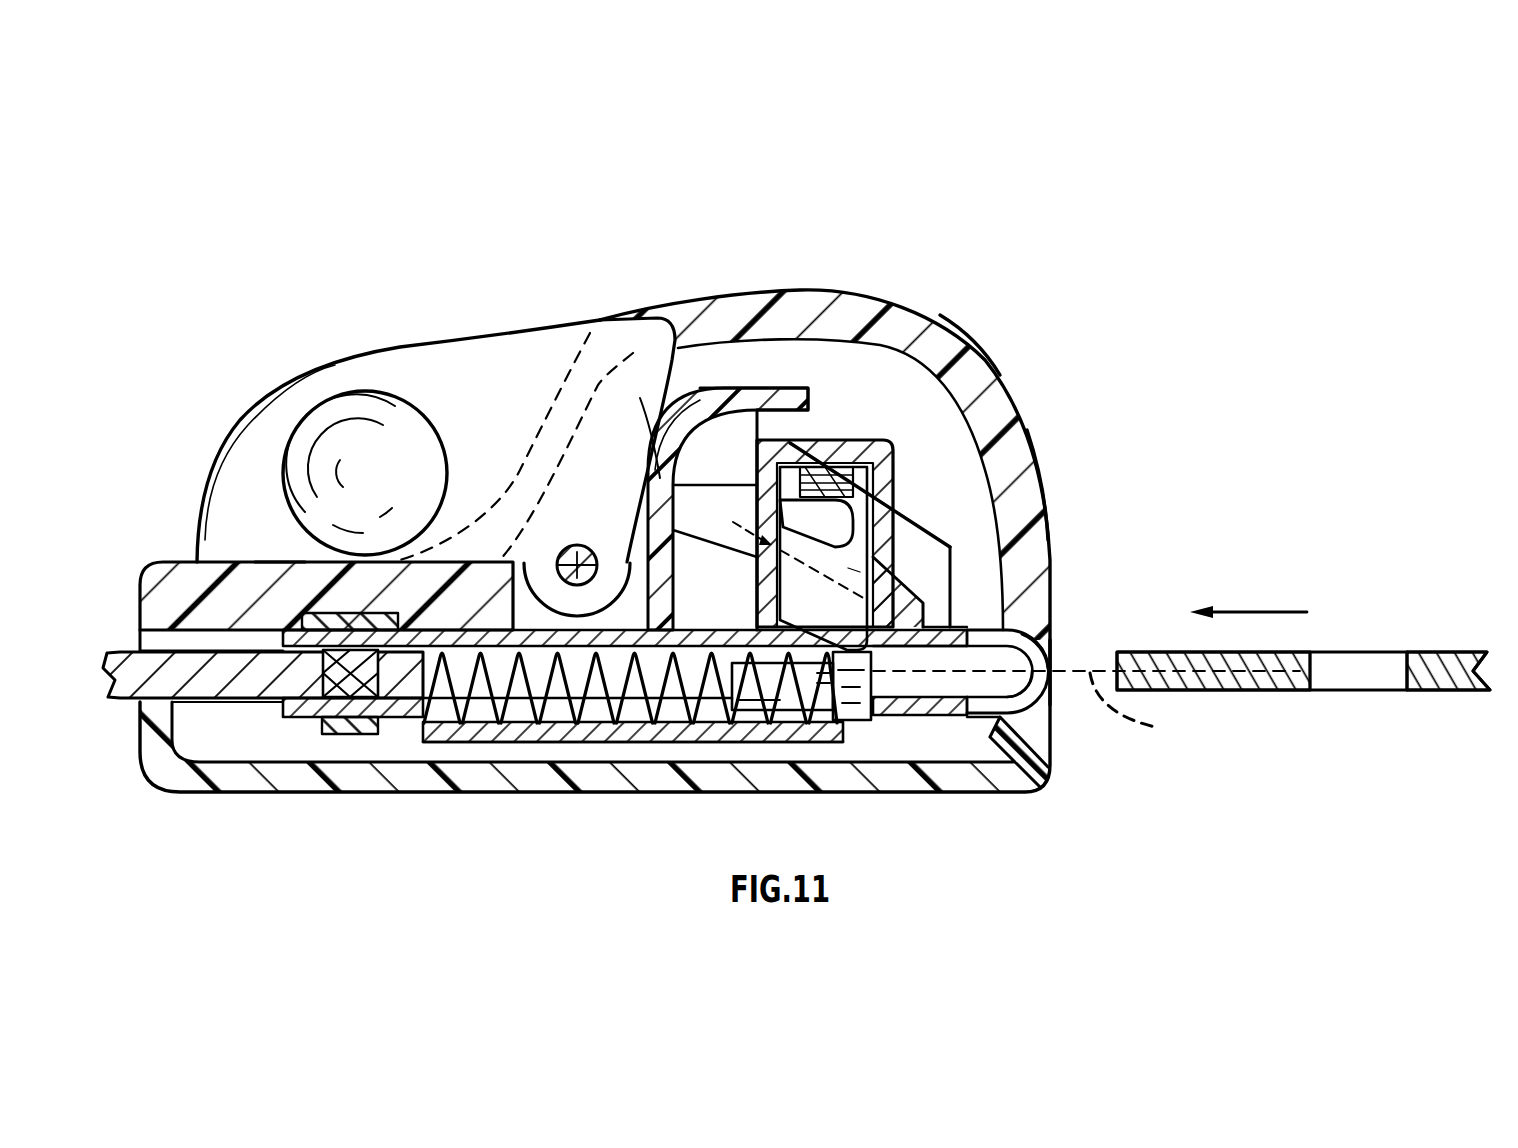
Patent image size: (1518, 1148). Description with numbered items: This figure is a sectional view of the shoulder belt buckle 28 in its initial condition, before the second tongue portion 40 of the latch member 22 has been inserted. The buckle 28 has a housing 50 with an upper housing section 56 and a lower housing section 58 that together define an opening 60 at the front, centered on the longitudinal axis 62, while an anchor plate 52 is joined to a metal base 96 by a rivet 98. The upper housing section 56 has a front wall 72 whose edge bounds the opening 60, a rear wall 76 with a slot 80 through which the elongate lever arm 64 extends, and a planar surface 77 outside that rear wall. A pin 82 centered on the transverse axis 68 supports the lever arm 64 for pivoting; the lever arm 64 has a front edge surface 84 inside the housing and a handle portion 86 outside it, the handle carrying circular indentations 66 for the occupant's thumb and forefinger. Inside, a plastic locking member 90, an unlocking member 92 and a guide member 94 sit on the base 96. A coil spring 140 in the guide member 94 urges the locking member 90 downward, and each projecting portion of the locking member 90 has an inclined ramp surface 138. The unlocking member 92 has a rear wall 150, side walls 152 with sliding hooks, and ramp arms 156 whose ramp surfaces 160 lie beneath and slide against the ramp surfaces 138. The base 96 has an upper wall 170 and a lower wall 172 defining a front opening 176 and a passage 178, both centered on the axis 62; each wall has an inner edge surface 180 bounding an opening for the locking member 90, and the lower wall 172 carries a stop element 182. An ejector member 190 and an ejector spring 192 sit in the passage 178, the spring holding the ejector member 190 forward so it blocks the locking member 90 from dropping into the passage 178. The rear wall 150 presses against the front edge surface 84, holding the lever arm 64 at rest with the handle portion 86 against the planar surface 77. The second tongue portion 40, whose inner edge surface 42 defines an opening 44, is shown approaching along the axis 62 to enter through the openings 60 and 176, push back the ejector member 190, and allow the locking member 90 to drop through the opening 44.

The latch member 22 is at (1325, 568).
The shoulder belt buckle 28 is at (836, 205).
The second tongue portion 40 is at (1468, 640).
The inner edge surface 42 is at (1407, 672).
The opening 44 is at (1360, 660).
The housing 50 is at (947, 306).
The anchor plate 52 is at (124, 632).
The upper housing section 56 is at (1040, 507).
The lower housing section 58 is at (1047, 783).
The opening 60 is at (1065, 625).
The longitudinal axis 62 is at (1146, 710).
The lever arm 64 is at (325, 355).
The circular indentations 66 is at (310, 437).
The transverse axis 68 is at (568, 548).
The front wall 72 is at (990, 398).
The rear wall 76 is at (660, 310).
The planar surface 77 is at (278, 557).
The slot 80 is at (535, 432).
The pin 82 is at (576, 545).
The front edge surface 84 is at (652, 412).
The handle portion 86 is at (240, 466).
The locking member 90 is at (850, 570).
The unlocking member 92 is at (800, 378).
The guide member 94 is at (897, 430).
The base 96 is at (630, 740).
The rivet 98 is at (342, 735).
The ramp surface 138 is at (815, 553).
The coil spring 140 is at (820, 468).
The rear wall 150 is at (658, 427).
The side wall 152 is at (748, 426).
The ramp arm 156 is at (728, 475).
The ramp surface 160 is at (715, 540).
The upper wall 170 is at (950, 633).
The lower wall 172 is at (957, 713).
The opening 176 is at (1043, 640).
The passage 178 is at (955, 681).
The inner edge surface 180 is at (767, 636).
The stop element 182 is at (800, 745).
The ejector member 190 is at (850, 700).
The ejector spring 192 is at (470, 728).